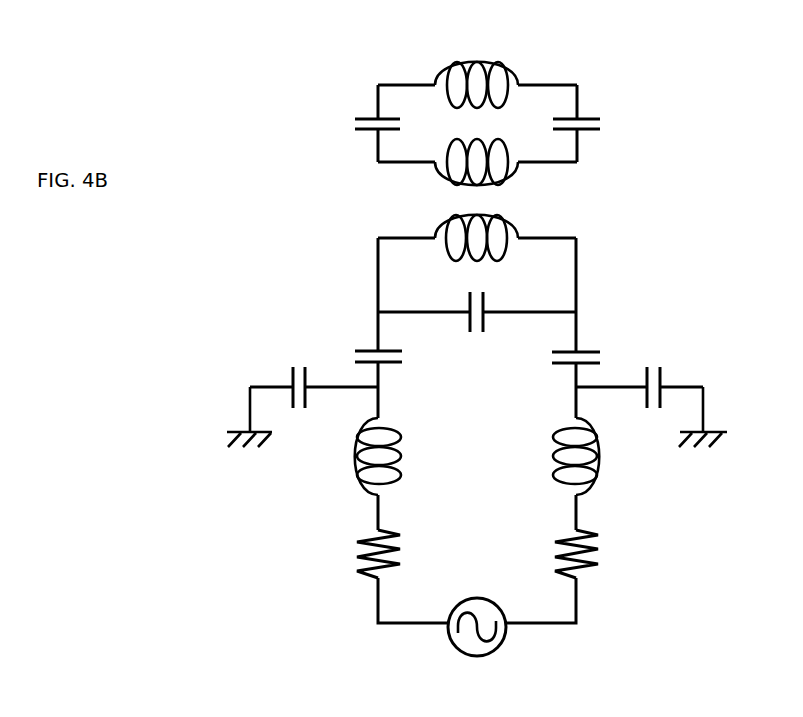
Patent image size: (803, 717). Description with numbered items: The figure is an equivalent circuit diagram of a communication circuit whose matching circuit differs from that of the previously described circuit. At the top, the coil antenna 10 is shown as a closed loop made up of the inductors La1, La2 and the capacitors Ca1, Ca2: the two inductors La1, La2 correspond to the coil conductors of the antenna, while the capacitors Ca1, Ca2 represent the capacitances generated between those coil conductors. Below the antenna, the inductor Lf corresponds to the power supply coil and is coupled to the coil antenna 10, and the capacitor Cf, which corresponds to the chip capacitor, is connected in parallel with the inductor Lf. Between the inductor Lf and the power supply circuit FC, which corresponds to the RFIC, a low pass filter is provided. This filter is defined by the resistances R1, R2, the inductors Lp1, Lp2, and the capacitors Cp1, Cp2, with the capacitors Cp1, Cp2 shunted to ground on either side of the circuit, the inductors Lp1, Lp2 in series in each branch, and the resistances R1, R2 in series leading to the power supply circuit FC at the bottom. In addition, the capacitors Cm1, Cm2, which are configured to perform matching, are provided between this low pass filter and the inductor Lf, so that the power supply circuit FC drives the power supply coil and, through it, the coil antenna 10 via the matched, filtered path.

The coil antenna 10 is at (503, 111).
The inductor La1 is at (476, 69).
The inductor La2 is at (496, 165).
The capacitor Ca1 is at (356, 123).
The capacitor Ca2 is at (598, 123).
The inductor Lf is at (489, 232).
The capacitor Cf is at (477, 305).
The capacitor Cm1 is at (402, 358).
The capacitor Cm2 is at (551, 358).
The capacitor Cp1 is at (302, 390).
The capacitor Cp2 is at (651, 390).
The inductor Lp1 is at (402, 456).
The inductor Lp2 is at (551, 456).
The resistance R1 is at (360, 554).
The resistance R2 is at (593, 554).
The power supply circuit FC is at (500, 651).